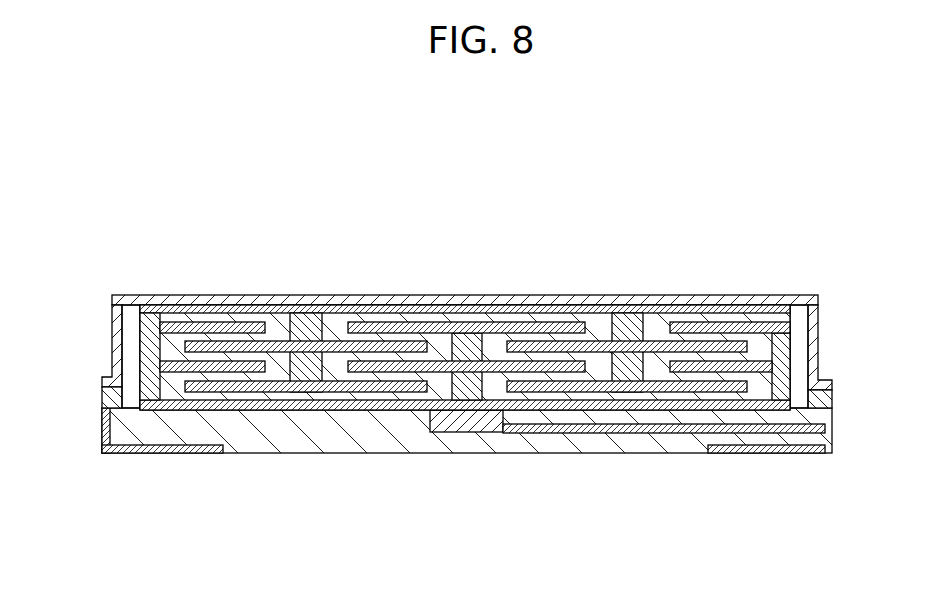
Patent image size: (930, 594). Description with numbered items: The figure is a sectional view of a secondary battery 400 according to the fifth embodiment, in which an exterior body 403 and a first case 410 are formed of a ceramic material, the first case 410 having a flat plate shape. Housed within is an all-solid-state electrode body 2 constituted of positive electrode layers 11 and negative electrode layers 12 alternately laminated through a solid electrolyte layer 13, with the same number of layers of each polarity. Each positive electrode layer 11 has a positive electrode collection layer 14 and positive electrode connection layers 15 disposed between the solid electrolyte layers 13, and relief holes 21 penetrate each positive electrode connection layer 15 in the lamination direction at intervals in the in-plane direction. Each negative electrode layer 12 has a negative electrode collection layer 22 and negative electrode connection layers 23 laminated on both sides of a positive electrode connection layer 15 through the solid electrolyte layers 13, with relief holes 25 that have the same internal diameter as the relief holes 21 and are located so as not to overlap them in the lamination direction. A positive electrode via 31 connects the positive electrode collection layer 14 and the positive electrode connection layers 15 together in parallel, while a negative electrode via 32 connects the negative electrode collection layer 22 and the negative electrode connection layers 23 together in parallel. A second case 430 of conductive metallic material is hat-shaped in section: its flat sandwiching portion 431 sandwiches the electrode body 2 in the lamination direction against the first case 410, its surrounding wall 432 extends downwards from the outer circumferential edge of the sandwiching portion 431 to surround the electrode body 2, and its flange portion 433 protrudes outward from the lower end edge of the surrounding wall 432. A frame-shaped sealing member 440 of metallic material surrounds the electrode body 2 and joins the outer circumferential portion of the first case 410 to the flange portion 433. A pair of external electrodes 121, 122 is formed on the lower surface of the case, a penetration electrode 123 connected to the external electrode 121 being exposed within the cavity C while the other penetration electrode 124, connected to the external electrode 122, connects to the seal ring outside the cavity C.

The electrode body 2 is at (797, 420).
The positive electrode layer 11 is at (692, 410).
The negative electrode layer 12 is at (722, 298).
The solid electrolyte layer 13 is at (278, 400).
The positive electrode collection layer 14 is at (410, 412).
The positive electrode connection layer 15 is at (527, 373).
The relief hole 21 is at (340, 372).
The negative electrode collection layer 22 is at (373, 310).
The negative electrode connection layer 23 is at (278, 270).
The relief hole 25 is at (447, 320).
The positive electrode via 31 is at (442, 402).
The negative electrode via 32 is at (652, 318).
The external electrode 121 is at (742, 455).
The external electrode 122 is at (115, 453).
The penetration electrode 123 is at (615, 433).
The penetration electrode 124 is at (100, 423).
The secondary battery 400 is at (707, 252).
The exterior body 403 is at (77, 373).
The first case 410 is at (250, 440).
The second case 430 is at (298, 290).
The sandwiching portion 431 is at (203, 300).
The surrounding wall 432 is at (110, 323).
The flange portion 433 is at (104, 378).
The sealing member 440 is at (101, 396).
The cavity C is at (616, 308).